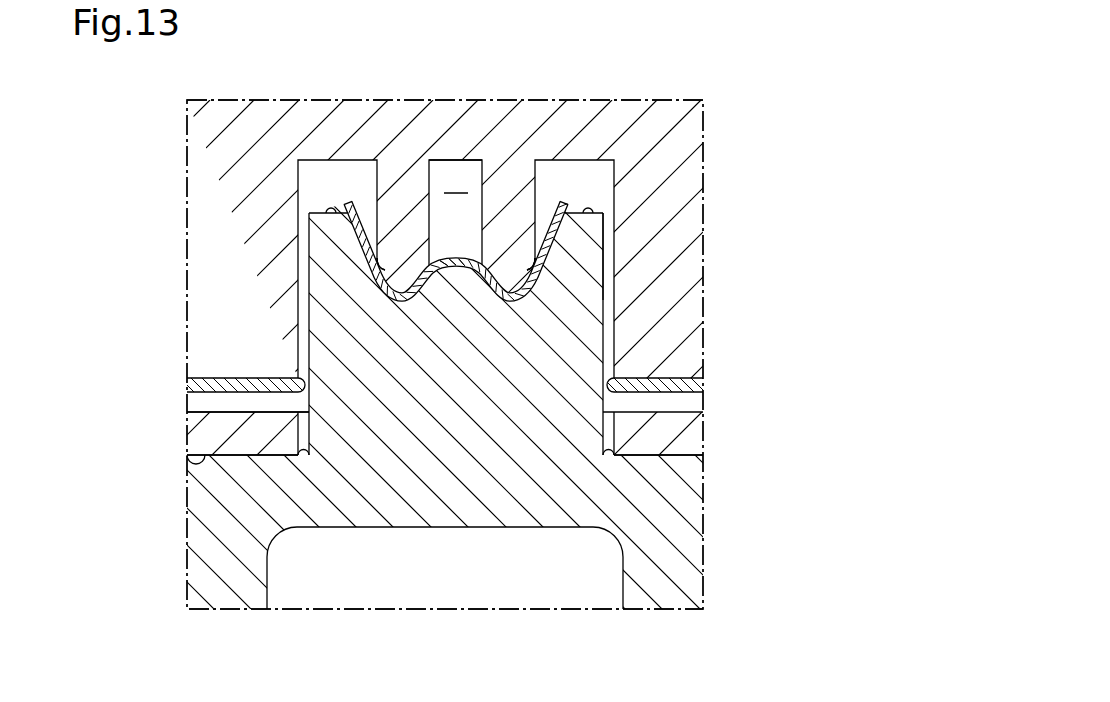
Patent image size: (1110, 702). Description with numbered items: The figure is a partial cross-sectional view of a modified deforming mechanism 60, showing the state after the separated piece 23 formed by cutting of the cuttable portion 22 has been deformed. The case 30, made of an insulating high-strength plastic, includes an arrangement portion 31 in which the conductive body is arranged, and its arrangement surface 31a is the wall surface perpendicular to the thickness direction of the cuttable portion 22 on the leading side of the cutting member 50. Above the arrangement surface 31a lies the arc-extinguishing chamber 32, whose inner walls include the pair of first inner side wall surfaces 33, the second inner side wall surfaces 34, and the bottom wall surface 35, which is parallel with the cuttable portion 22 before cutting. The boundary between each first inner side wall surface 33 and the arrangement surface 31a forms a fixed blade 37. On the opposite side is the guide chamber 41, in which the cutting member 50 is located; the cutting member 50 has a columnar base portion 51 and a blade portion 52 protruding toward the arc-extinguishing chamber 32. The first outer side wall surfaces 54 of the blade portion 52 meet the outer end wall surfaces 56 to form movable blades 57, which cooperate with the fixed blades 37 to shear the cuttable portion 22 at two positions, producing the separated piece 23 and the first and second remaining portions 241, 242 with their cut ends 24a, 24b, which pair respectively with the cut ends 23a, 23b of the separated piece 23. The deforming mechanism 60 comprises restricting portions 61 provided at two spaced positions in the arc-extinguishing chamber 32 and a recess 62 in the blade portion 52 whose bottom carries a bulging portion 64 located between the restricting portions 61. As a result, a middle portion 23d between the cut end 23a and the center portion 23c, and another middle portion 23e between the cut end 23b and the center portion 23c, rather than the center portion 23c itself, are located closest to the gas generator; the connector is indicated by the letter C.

The case 30 is at (695, 139).
The first inner side wall surfaces 33 is at (310, 160).
The bottom wall surface 35 is at (350, 160).
The restricting portion 61 is at (507, 197).
The deforming mechanism 60 is at (523, 200).
The connector C is at (742, 100).
The cut end 23a is at (345, 225).
The arc-extinguishing chamber 32 is at (455, 177).
The cut end 23b is at (564, 226).
The second inner side wall surfaces 34 is at (597, 197).
The movable blade 57 is at (308, 209).
The outer end wall surfaces 56 is at (382, 289).
The separated piece 23 is at (380, 272).
The center portion 23c is at (457, 258).
The middle portion 23d is at (404, 301).
The bulging portion 64 is at (457, 272).
The middle portion 23e is at (508, 301).
The recess 62 is at (545, 280).
The fixed blade 37 is at (300, 376).
The first remaining portion 241 is at (187, 386).
The cuttable portion 22 is at (441, 385).
The arrangement surface 31a is at (202, 400).
The arrangement portion 31 is at (410, 420).
The cut end 24a is at (303, 389).
The cut end 24b is at (609, 389).
The second remaining portion 242 is at (704, 387).
The blade portion 52 is at (615, 420).
The base portion 51 is at (690, 468).
The cutting member 50 is at (768, 430).
The guide chamber 41 is at (196, 464).
The first outer side wall surfaces 54 is at (303, 458).